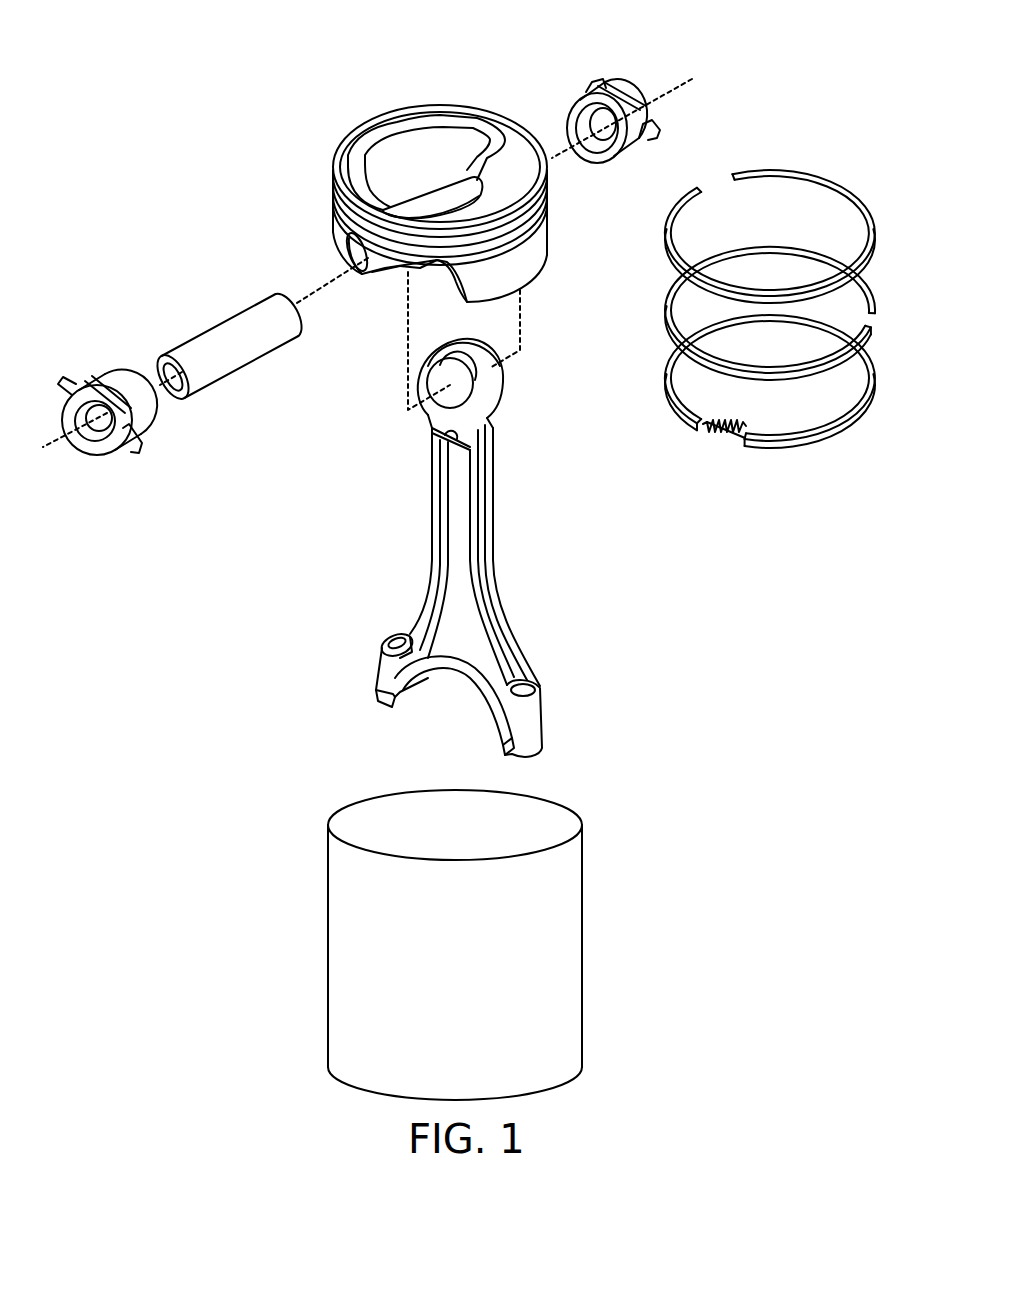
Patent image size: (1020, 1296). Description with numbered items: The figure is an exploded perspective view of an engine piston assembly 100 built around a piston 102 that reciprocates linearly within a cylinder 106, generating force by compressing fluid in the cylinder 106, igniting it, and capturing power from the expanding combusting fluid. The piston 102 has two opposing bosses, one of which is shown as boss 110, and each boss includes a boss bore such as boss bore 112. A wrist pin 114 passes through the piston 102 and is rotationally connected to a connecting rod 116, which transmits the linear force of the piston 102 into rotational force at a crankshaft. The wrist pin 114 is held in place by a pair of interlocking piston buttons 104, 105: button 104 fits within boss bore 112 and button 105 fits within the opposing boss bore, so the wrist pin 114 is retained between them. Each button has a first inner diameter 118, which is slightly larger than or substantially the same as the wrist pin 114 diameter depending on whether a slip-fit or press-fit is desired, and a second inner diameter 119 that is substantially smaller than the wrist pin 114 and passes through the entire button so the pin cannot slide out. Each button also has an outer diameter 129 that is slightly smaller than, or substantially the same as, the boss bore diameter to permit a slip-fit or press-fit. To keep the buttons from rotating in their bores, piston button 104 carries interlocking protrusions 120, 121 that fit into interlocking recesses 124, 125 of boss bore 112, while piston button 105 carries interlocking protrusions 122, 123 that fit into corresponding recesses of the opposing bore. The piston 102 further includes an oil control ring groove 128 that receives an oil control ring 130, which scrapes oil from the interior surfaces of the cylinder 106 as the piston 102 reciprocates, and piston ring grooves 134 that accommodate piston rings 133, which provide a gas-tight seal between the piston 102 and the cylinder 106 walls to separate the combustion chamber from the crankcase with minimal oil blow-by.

The engine piston assembly 100 is at (212, 90).
The piston 102 is at (455, 251).
The interlocking piston button 104 is at (148, 441).
The interlocking piston button 105 is at (613, 83).
The cylinder 106 is at (473, 962).
The boss 110 is at (395, 278).
The boss bore 112 is at (357, 273).
The wrist pin 114 is at (208, 327).
The connecting rod 116 is at (494, 588).
The first inner diameter 118 is at (645, 93).
The second inner diameter 119 is at (92, 450).
The interlocking protrusion 120 is at (126, 463).
The interlocking protrusion 121 is at (66, 381).
The interlocking protrusion 122 is at (652, 134).
The interlocking protrusion 123 is at (614, 103).
The interlocking recess 124 is at (383, 282).
The interlocking recess 125 is at (353, 258).
The oil control ring groove 128 is at (545, 228).
The outer diameter 129 is at (128, 470).
The oil control ring 130 is at (750, 442).
The piston rings 133 is at (770, 299).
The piston ring grooves 134 is at (562, 190).